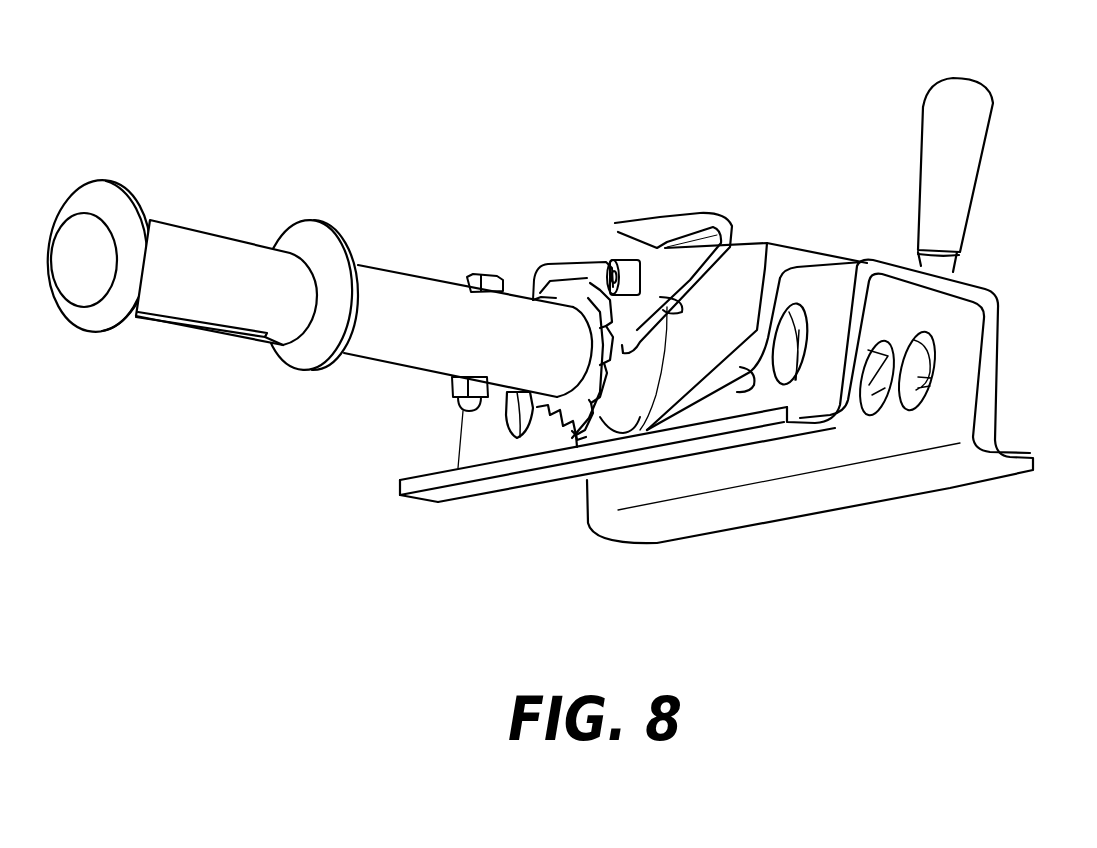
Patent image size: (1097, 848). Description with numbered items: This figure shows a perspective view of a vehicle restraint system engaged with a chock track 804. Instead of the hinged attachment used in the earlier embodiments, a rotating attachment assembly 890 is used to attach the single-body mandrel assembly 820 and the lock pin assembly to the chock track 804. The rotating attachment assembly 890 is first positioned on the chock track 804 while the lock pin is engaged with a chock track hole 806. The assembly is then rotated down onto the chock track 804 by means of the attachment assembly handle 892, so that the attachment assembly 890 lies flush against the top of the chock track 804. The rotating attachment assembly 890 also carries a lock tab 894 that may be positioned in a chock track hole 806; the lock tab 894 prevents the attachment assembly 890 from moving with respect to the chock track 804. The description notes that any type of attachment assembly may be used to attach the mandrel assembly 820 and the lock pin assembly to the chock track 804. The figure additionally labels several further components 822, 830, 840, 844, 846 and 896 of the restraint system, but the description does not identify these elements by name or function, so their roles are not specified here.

The chock track 804 is at (482, 478).
The chock track hole 806 is at (930, 367).
The single-body mandrel assembly 820 is at (360, 346).
The handle grip 822 is at (165, 302).
The nut 830 is at (468, 276).
The ratchet assembly 840 is at (572, 230).
The ratchet wheel 844 is at (586, 433).
The pawl 846 is at (661, 220).
The rotating attachment assembly 890 is at (764, 247).
The attachment assembly handle 892 is at (932, 118).
The lock tab 894 is at (880, 392).
The cam plate 896 is at (637, 388).